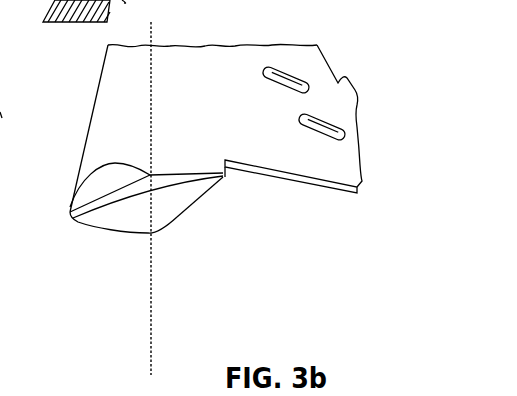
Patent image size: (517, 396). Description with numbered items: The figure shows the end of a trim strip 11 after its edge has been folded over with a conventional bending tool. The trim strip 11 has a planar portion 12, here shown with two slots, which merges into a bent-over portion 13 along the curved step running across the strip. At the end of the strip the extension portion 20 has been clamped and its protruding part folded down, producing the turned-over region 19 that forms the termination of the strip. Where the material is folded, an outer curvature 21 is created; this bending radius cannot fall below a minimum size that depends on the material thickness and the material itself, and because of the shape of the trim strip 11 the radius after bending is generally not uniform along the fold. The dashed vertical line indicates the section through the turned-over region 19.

The trim strip 11 is at (213, 56).
The planar portion 12 is at (323, 90).
The bent-over portion 13 is at (115, 77).
The turned-over region 19 is at (163, 208).
The extension portion 20 is at (170, 58).
The outer curvature 21 is at (93, 175).